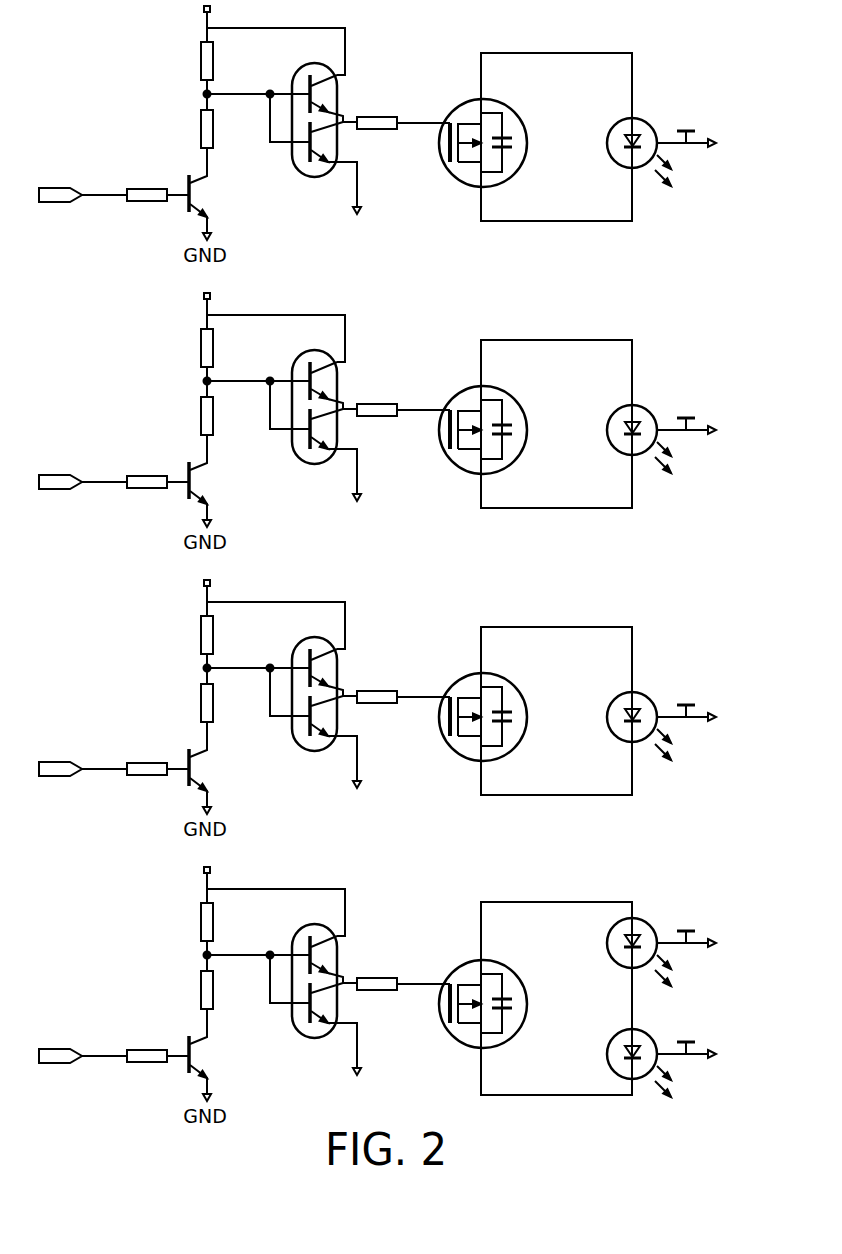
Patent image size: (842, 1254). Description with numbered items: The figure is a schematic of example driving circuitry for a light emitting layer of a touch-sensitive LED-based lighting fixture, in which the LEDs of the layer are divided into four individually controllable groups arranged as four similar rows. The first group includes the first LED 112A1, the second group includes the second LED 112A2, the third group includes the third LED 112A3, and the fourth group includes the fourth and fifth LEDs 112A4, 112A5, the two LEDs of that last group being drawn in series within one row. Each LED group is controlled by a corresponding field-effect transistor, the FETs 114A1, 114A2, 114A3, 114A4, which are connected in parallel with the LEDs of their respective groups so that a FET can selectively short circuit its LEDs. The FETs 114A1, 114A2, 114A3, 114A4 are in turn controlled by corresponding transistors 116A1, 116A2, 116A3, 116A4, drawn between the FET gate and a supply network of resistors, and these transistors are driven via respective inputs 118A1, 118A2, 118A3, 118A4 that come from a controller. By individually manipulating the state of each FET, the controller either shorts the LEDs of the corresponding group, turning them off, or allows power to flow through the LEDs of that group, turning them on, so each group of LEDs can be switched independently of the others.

The first LED 112A1 is at (648, 122).
The second LED 112A2 is at (688, 427).
The third LED 112A3 is at (688, 714).
The fourth LED 112A4 is at (688, 939).
The fifth LED 112A5 is at (688, 1050).
The FET 114A1 is at (455, 108).
The FET 114A2 is at (452, 416).
The FET 114A3 is at (452, 703).
The FET 114A4 is at (452, 990).
The transistor 116A1 is at (302, 63).
The transistor 116A2 is at (301, 422).
The transistor 116A3 is at (301, 709).
The transistor 116A4 is at (301, 996).
The input 118A1 is at (53, 188).
The input 118A2 is at (65, 455).
The input 118A3 is at (65, 742).
The input 118A4 is at (65, 1029).